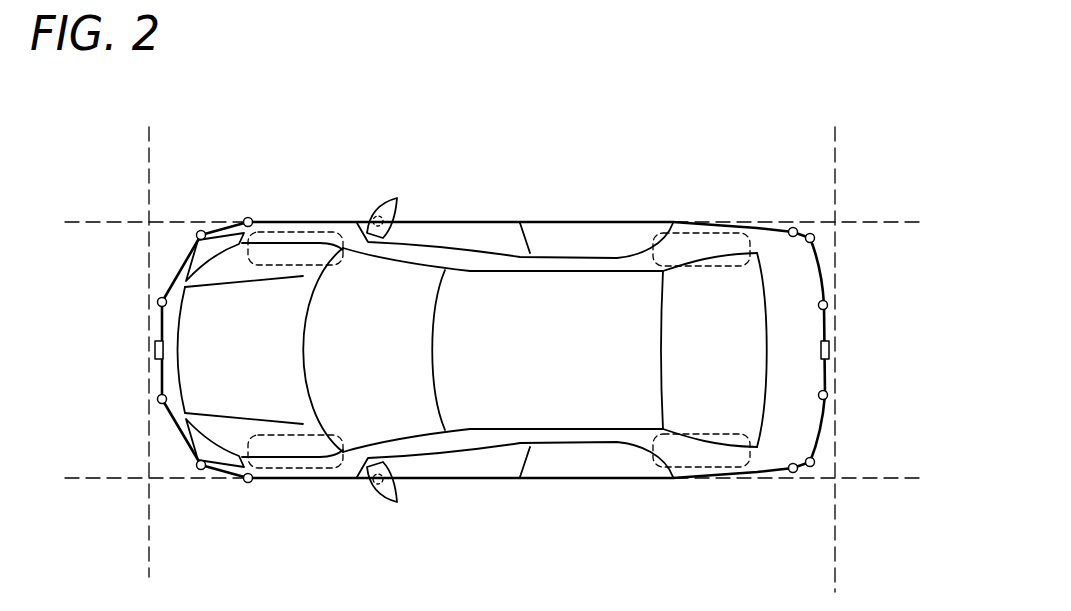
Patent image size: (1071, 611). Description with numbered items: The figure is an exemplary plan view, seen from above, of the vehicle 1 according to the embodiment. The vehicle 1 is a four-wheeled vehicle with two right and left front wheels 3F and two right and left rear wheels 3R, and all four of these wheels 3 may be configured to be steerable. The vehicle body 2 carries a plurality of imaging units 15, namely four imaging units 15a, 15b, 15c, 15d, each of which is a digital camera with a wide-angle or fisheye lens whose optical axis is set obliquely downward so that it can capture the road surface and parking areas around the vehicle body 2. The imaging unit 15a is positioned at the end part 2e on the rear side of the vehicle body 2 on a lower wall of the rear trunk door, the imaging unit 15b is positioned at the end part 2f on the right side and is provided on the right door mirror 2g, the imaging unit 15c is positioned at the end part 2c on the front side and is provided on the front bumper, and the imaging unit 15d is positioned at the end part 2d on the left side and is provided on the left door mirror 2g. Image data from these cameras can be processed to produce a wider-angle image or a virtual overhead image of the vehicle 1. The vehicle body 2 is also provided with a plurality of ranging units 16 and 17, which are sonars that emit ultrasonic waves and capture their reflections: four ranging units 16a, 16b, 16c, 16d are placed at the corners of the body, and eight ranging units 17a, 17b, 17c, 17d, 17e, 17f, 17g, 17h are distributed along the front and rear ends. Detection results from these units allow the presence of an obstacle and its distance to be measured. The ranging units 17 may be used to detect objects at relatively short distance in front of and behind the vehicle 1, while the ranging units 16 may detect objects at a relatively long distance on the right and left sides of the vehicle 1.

The vehicle 1 is at (610, 140).
The vehicle body 2 is at (775, 225).
The end part on front side 2c is at (158, 371).
The end part on left side 2d is at (593, 480).
The end part on rear side 2e is at (829, 371).
The end part on right side 2f is at (603, 222).
The door mirror 2g is at (399, 200).
The wheels 3 is at (499, 351).
The front wheels 3F is at (292, 232).
The rear wheels 3R is at (698, 232).
The imaging units 15 is at (502, 368).
The imaging unit 15a is at (829, 349).
The imaging unit 15b is at (383, 198).
The imaging unit 15c is at (156, 350).
The imaging unit 15d is at (380, 497).
The ranging units 16 is at (501, 337).
The ranging unit 16a is at (794, 473).
The ranging unit 16b is at (796, 227).
The ranging unit 16c is at (244, 218).
The ranging unit 16d is at (245, 483).
The ranging units 17 is at (498, 320).
The ranging unit 17a is at (816, 462).
The ranging unit 17b is at (828, 397).
The ranging unit 17c is at (828, 303).
The ranging unit 17d is at (815, 236).
The ranging unit 17e is at (196, 237).
The ranging unit 17f is at (158, 302).
The ranging unit 17g is at (158, 399).
The ranging unit 17h is at (196, 465).